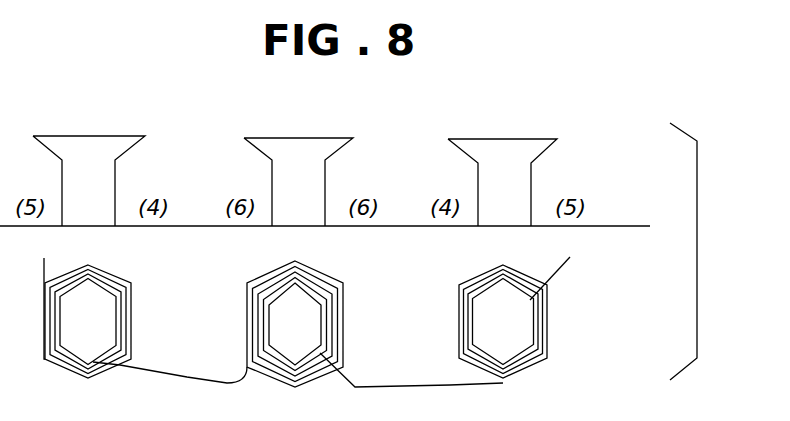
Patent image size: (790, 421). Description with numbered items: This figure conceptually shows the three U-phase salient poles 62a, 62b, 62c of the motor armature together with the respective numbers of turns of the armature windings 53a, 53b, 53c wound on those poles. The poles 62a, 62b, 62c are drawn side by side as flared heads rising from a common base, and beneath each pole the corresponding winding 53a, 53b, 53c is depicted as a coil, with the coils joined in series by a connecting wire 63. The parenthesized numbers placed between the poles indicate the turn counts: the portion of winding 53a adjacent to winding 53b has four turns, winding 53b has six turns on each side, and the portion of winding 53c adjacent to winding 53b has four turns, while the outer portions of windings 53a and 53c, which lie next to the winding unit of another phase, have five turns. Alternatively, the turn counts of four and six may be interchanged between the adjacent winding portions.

The U-phase salient pole 62a is at (89, 135).
The U-phase salient pole 62b is at (300, 137).
The U-phase salient pole 62c is at (504, 138).
The armature winding 53a is at (115, 275).
The armature winding 53b is at (327, 272).
The armature winding 53c is at (548, 313).
The connecting wire 63 is at (187, 375).